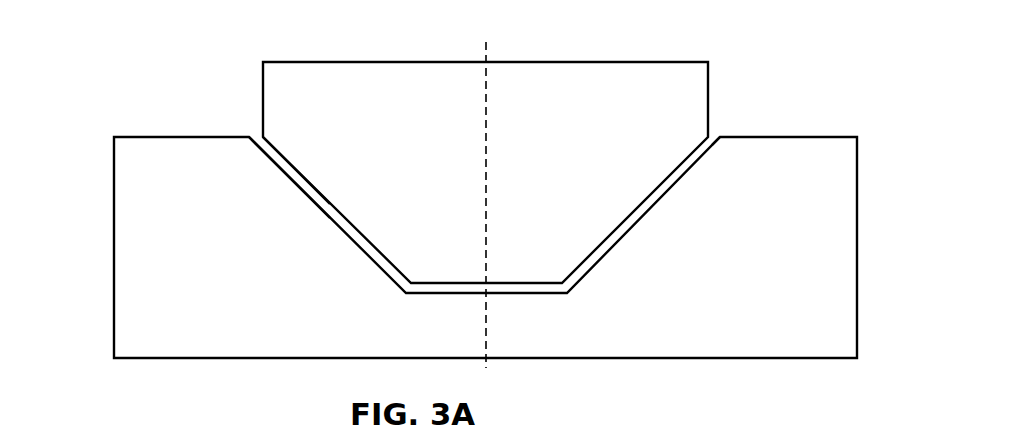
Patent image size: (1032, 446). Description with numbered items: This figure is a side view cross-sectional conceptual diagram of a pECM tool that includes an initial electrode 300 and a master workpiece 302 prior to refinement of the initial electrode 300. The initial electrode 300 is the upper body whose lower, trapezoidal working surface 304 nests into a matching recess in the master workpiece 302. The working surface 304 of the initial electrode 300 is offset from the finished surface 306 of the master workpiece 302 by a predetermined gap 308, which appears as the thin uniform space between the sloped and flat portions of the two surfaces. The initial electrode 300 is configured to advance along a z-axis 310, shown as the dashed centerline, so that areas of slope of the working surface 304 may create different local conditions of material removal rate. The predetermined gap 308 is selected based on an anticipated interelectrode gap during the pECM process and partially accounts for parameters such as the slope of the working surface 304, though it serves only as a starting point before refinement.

The initial electrode 300 is at (690, 72).
The master workpiece 302 is at (839, 155).
The working surface 304 is at (290, 167).
The finished surface 306 is at (323, 213).
The predetermined gap 308 is at (716, 135).
The z-axis 310 is at (487, 44).